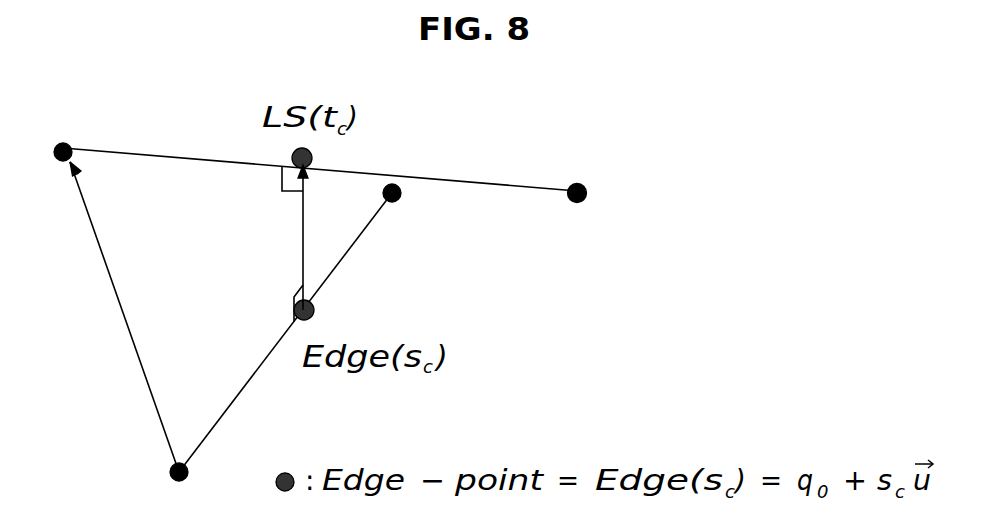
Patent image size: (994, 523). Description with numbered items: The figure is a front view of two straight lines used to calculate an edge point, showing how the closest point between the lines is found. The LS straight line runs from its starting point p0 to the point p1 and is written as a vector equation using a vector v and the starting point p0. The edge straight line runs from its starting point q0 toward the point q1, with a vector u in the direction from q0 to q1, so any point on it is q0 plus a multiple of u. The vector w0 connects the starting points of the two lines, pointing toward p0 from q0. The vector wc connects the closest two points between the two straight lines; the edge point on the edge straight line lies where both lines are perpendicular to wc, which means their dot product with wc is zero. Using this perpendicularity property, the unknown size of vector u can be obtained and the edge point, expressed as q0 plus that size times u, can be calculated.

The starting point of the LS straight line p0 is at (46, 151).
The end point of the LS straight line p1 is at (592, 206).
The starting point of the edge straight line q0 is at (162, 481).
The end point of the edge straight line q1 is at (400, 219).
The vector connecting the starting points w0 is at (119, 317).
The vector connecting the closest two points wc is at (285, 237).